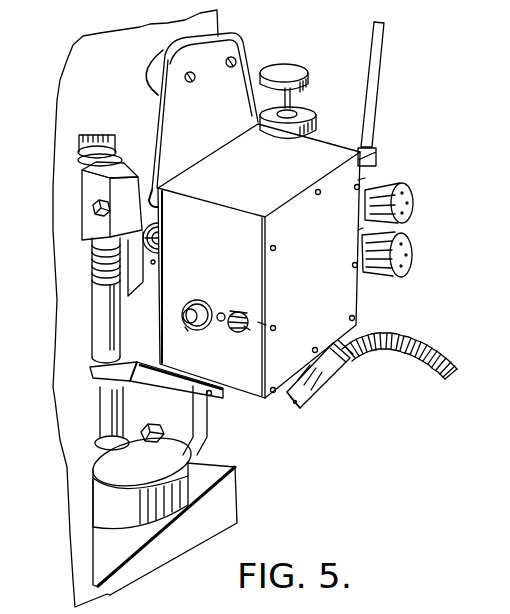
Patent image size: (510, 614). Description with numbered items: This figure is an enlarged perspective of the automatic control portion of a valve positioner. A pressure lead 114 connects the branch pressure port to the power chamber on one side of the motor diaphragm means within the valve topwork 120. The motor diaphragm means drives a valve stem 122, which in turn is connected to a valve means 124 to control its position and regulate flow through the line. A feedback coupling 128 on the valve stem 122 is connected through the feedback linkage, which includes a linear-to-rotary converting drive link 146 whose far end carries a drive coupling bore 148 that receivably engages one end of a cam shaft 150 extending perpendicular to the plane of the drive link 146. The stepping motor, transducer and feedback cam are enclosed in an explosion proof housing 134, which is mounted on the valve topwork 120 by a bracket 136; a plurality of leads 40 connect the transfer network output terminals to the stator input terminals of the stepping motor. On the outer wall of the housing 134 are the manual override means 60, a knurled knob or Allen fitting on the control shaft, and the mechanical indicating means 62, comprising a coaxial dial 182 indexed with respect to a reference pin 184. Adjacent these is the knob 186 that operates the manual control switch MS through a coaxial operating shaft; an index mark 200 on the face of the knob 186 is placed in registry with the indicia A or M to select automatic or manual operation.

The leads 40 is at (372, 347).
The manual override means 60 is at (186, 333).
The mechanical indicating means 62 is at (196, 300).
The pressure lead 114 is at (373, 72).
The valve topwork 120 is at (117, 108).
The valve stem 122 is at (103, 325).
The valve means 124 is at (212, 485).
The feedback coupling 128 is at (197, 388).
The explosion proof housing 134 is at (327, 280).
The bracket 136 is at (222, 118).
The linear-to-rotary converting drive link 146 is at (148, 228).
The drive coupling bore 148 is at (152, 253).
The cam shaft 150 is at (152, 240).
The dial 182 is at (222, 311).
The reference pin 184 is at (243, 305).
The knob 186 is at (231, 331).
The index mark 200 is at (247, 323).
The manual control switch MS is at (262, 328).